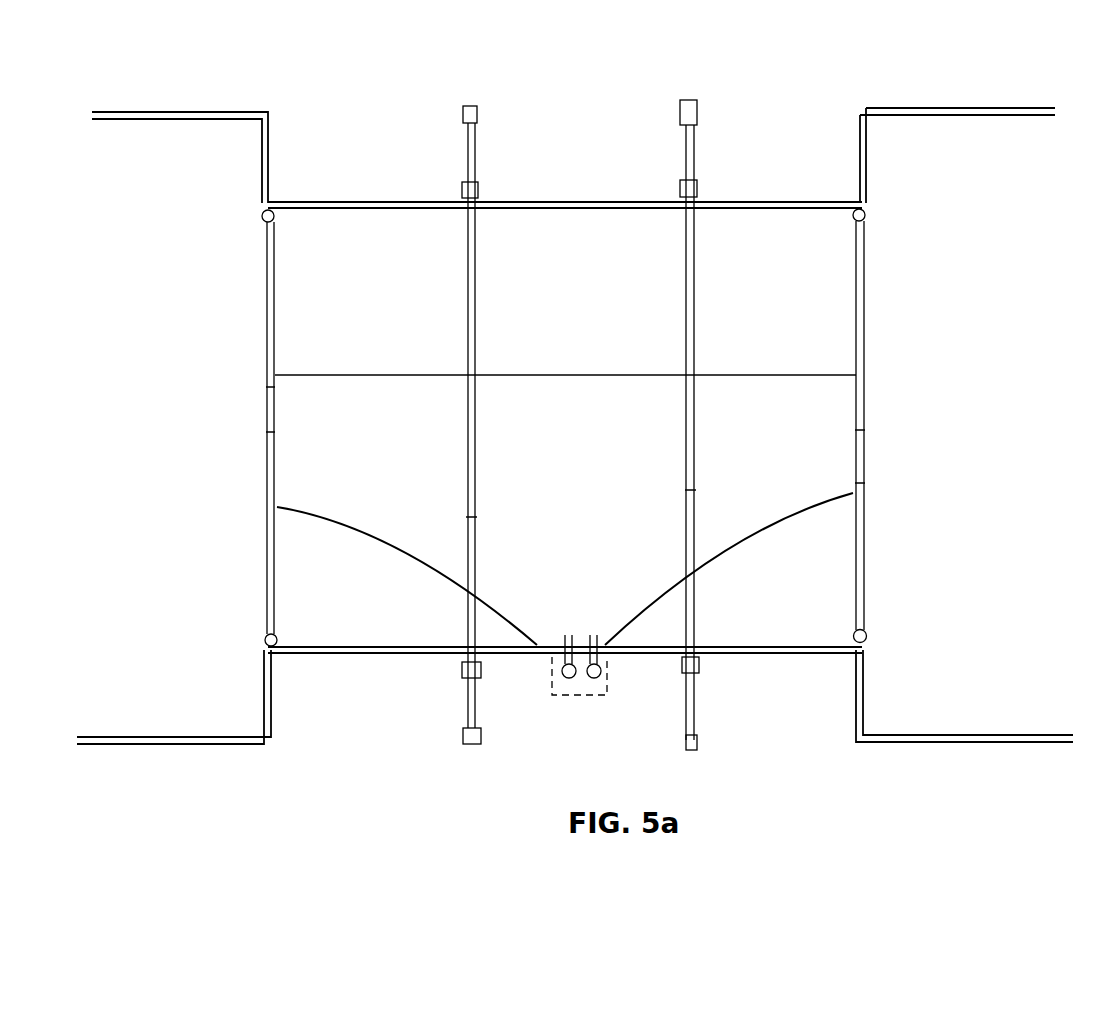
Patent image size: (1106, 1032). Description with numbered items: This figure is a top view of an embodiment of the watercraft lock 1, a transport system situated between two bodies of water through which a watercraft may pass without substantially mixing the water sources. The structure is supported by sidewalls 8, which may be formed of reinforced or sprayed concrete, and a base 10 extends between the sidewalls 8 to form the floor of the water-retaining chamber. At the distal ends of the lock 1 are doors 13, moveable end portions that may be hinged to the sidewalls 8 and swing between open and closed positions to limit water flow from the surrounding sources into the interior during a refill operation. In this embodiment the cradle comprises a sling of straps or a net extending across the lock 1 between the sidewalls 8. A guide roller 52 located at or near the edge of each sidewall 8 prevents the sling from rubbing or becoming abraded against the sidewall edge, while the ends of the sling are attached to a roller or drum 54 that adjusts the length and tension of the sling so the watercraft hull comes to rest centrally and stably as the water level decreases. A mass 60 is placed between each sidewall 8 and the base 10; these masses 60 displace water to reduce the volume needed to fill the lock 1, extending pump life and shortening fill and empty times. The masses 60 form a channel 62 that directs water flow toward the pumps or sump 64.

The watercraft lock 1 is at (825, 88).
The sidewall 8 is at (618, 196).
The base 10 is at (578, 497).
The door 13 is at (262, 300).
The guide roller 52 is at (478, 190).
The roller or drum 54 is at (478, 113).
The mass 60 is at (383, 250).
The channel 62 is at (597, 582).
The sump 64 is at (597, 690).